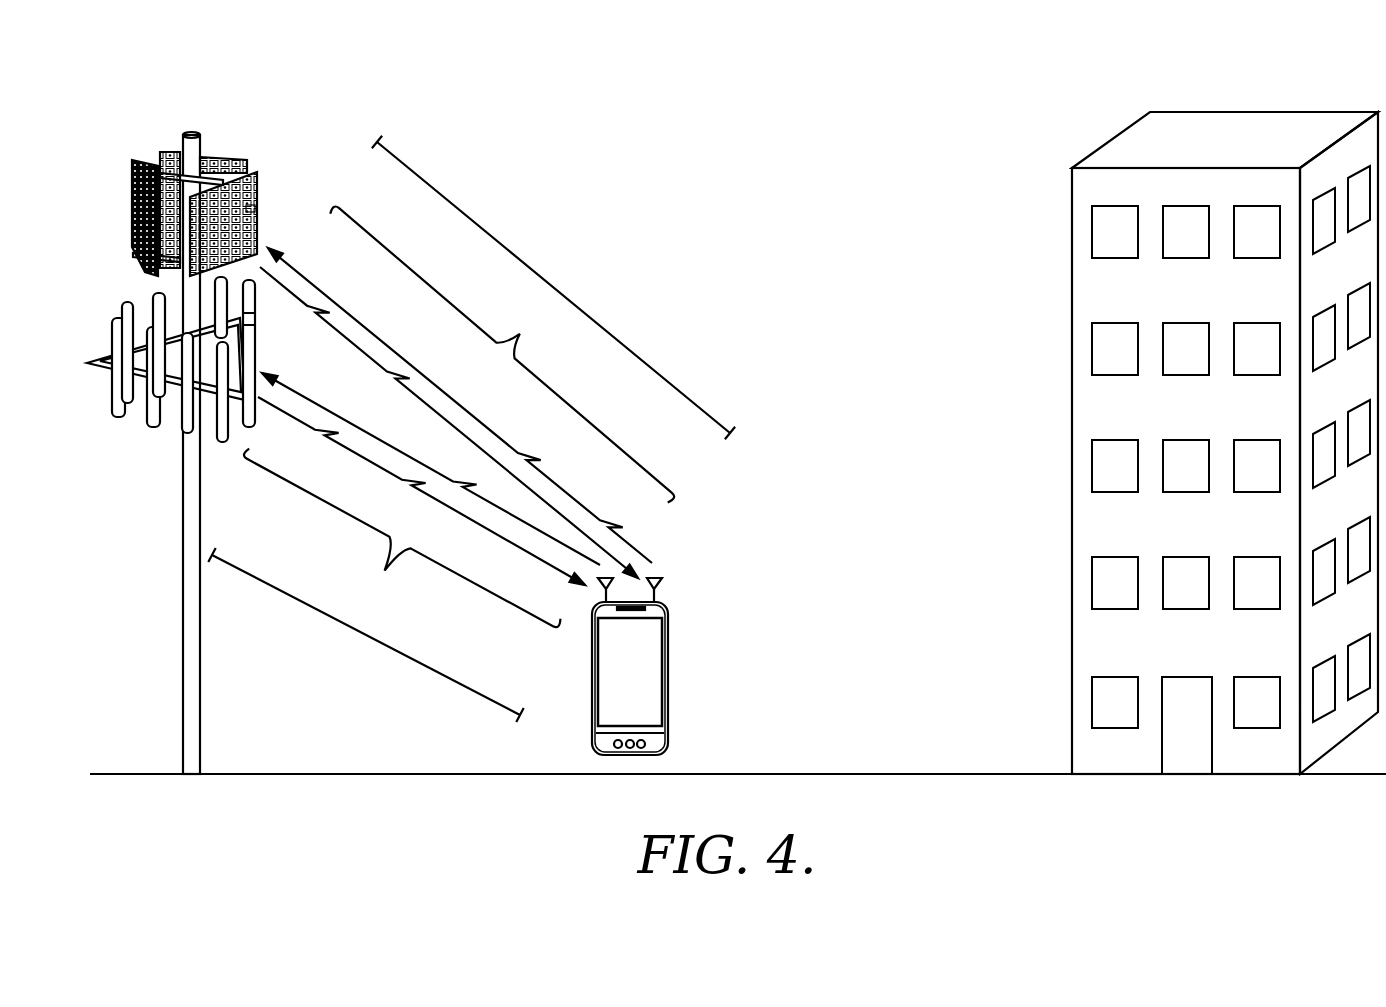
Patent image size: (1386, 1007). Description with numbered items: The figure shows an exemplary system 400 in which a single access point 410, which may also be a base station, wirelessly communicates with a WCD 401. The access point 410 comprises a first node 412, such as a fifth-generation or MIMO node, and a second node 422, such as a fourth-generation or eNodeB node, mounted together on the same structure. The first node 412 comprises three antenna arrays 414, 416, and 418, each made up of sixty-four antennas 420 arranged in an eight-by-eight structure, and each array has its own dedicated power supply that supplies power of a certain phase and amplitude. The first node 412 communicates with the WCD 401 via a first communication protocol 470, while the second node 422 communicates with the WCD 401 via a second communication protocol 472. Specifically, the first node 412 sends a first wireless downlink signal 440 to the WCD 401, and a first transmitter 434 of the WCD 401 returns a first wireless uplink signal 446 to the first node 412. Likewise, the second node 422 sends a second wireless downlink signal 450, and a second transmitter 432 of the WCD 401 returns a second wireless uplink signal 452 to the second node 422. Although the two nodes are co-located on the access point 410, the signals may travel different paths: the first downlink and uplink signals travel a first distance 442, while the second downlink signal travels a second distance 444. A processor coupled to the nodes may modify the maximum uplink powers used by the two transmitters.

The system 400 is at (566, 68).
The WCD 401 is at (588, 686).
The access point 410 is at (130, 523).
The first node 412 is at (258, 180).
The antenna array 414 is at (177, 152).
The antenna array 416 is at (128, 217).
The antenna array 418 is at (188, 290).
The antenna 420 is at (258, 210).
The second node 422 is at (143, 414).
The second transmitter 432 is at (599, 594).
The first transmitter 434 is at (663, 593).
The first wireless downlink signal 440 is at (426, 410).
The first distance 442 is at (546, 276).
The second distance 444 is at (363, 637).
The first wireless uplink signal 446 is at (323, 285).
The second wireless downlink signal 450 is at (493, 535).
The second wireless uplink signal 452 is at (303, 392).
The first communication protocol 470 is at (502, 355).
The second communication protocol 472 is at (402, 538).